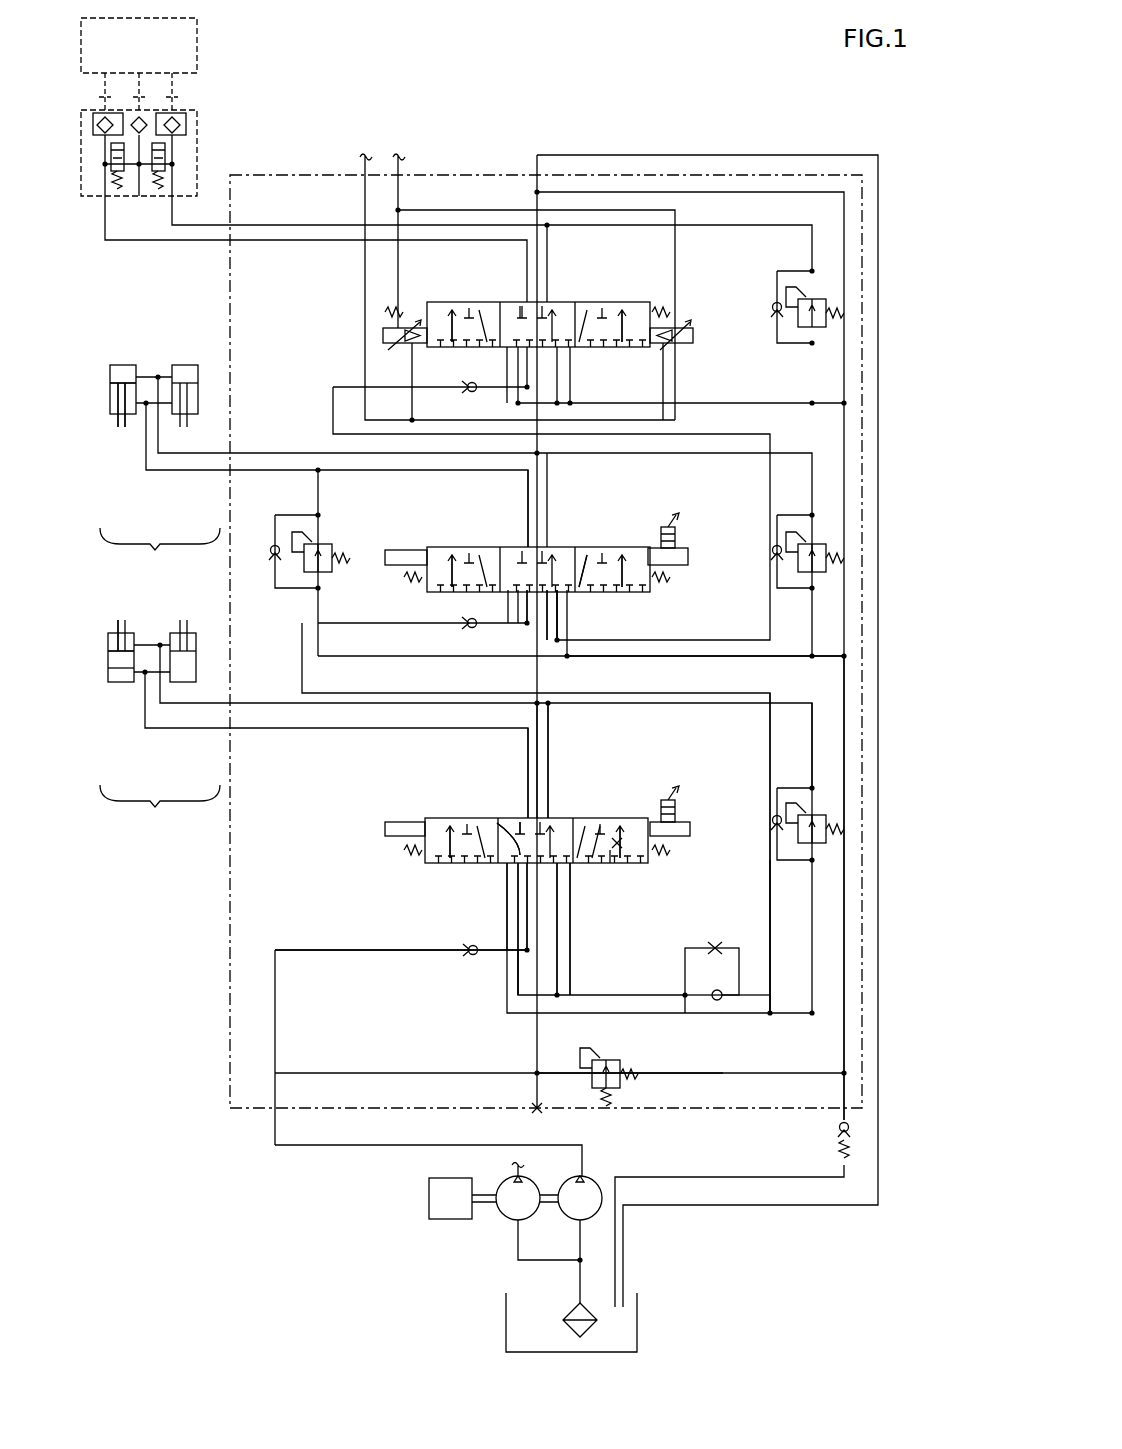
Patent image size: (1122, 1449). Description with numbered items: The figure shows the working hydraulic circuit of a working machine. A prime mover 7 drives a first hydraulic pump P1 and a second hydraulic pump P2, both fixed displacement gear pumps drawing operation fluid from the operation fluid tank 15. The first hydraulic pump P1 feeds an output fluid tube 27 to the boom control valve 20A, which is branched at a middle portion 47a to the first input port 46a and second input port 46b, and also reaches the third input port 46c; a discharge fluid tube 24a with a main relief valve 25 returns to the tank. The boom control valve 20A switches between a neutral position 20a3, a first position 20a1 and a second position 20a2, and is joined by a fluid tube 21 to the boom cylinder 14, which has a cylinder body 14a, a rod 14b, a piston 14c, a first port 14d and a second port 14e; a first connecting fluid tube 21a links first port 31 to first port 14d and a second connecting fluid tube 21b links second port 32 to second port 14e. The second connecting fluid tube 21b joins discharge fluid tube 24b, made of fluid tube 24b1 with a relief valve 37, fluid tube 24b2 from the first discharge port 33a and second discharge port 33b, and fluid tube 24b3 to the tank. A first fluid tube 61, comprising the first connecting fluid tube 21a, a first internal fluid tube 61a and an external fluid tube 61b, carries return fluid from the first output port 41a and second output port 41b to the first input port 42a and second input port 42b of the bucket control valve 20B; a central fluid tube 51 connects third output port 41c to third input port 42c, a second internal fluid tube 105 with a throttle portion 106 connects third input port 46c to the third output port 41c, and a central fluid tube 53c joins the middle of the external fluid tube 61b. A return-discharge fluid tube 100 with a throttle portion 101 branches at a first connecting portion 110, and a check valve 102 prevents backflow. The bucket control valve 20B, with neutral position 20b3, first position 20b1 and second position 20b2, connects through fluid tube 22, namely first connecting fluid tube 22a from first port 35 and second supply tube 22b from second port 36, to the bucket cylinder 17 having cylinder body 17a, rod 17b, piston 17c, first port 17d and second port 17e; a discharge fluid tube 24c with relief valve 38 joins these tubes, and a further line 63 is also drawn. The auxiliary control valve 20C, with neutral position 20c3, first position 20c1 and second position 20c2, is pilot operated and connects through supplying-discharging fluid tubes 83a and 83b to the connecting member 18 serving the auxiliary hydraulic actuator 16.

The hydraulic actuator 16 is at (200, 50).
The connecting member 18 is at (200, 122).
The supplying-discharging fluid tube 83a is at (268, 250).
The supplying-discharging fluid tube 83b is at (318, 232).
The auxiliary control valve 20C is at (652, 288).
The first position 20c1 is at (463, 297).
The second position 20c2 is at (640, 296).
The neutral position 20c3 is at (572, 302).
The bucket cylinder 17 is at (186, 365).
The cylinder body 17a is at (118, 383).
The rod 17b is at (122, 427).
The piston 17c is at (118, 380).
The first port 17d is at (150, 377).
The second port 17e is at (148, 405).
The fluid tube 22 is at (160, 552).
The first connecting fluid tube 22a is at (178, 468).
The second supply tube 22b is at (146, 480).
The relief valve 38 is at (828, 548).
The bucket control valve 20B is at (652, 518).
The first position 20b1 is at (459, 535).
The second position 20b2 is at (620, 538).
The neutral position 20b3 is at (578, 540).
The first port 35 is at (525, 547).
The second port 36 is at (540, 547).
The first input port 42a is at (527, 600).
The second input port 42b is at (547, 602).
The third input port 42c is at (557, 605).
The discharge fluid tube 24c is at (728, 656).
The hydraulic line 63 is at (548, 693).
The boom cylinder 14 is at (186, 645).
The cylinder body 14a is at (112, 651).
The rod 14b is at (118, 640).
The piston 14c is at (112, 670).
The first port 14d is at (143, 685).
The second port 14e is at (160, 645).
The fluid tube 21 is at (160, 809).
The first connecting fluid tube 21a is at (178, 718).
The second connecting fluid tube 21b is at (146, 742).
The boom control valve 20A is at (418, 806).
The first position 20a1 is at (438, 807).
The second position 20a2 is at (655, 808).
The neutral position 20a3 is at (472, 808).
The central fluid tube 53c is at (500, 840).
The first port 31 is at (518, 818).
The second port 32 is at (550, 818).
The central fluid tube 51 is at (542, 790).
The third output port 41c is at (550, 818).
The first internal fluid tube 61a is at (615, 818).
The throttle portion 106 is at (660, 836).
The second internal fluid tube 105 is at (610, 850).
The first discharge port 33a is at (507, 866).
The second discharge port 33b is at (518, 880).
The first output port 41a is at (510, 900).
The second output port 41b is at (528, 880).
The first input port 46a is at (518, 960).
The second input port 46b is at (557, 890).
The third input port 46c is at (570, 900).
The first fluid tube 61 is at (785, 746).
The external fluid tube 61b is at (770, 880).
The fluid tube 24b1 is at (812, 760).
The relief valve 37 is at (825, 822).
The return-discharge fluid tube 100 is at (740, 972).
The throttle portion 101 is at (728, 952).
The check valve 102 is at (732, 999).
The first connecting portion 110 is at (690, 1013).
The middle portion 47a is at (278, 1073).
The discharge fluid tube 24a is at (723, 1075).
The discharge fluid tube 24b is at (856, 1075).
The fluid tube 24b2 is at (559, 1061).
The fluid tube 24b3 is at (855, 1055).
The main relief valve 25 is at (610, 1060).
The output fluid tube 27 is at (345, 1147).
The prime mover 7 is at (450, 1220).
The first hydraulic pump P1 is at (588, 1185).
The second hydraulic pump P2 is at (506, 1216).
The operation fluid tank 15 is at (640, 1312).